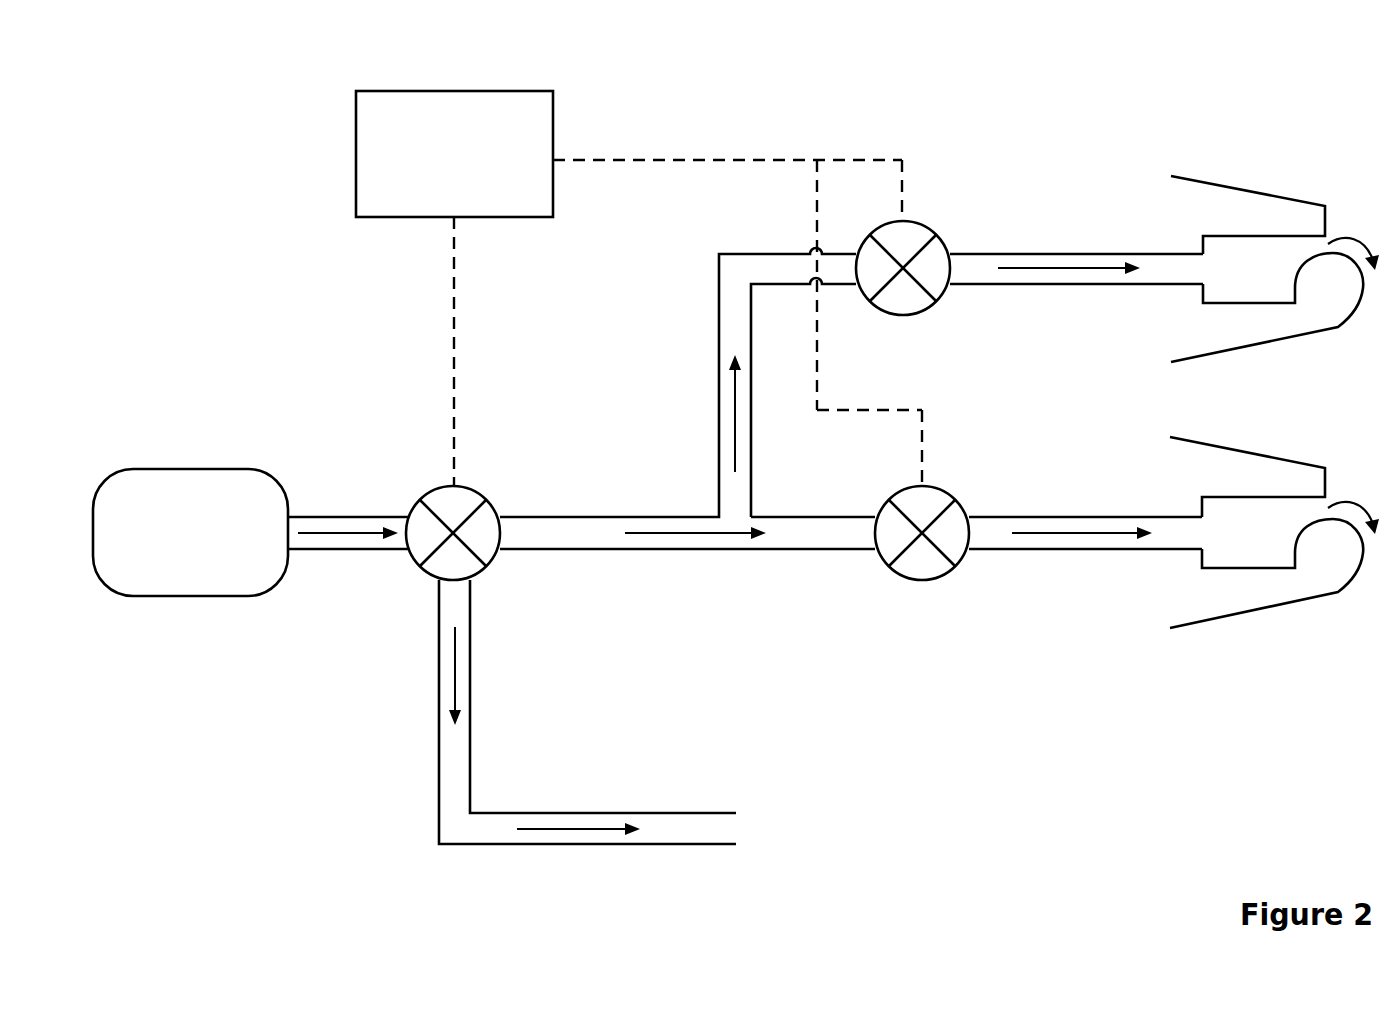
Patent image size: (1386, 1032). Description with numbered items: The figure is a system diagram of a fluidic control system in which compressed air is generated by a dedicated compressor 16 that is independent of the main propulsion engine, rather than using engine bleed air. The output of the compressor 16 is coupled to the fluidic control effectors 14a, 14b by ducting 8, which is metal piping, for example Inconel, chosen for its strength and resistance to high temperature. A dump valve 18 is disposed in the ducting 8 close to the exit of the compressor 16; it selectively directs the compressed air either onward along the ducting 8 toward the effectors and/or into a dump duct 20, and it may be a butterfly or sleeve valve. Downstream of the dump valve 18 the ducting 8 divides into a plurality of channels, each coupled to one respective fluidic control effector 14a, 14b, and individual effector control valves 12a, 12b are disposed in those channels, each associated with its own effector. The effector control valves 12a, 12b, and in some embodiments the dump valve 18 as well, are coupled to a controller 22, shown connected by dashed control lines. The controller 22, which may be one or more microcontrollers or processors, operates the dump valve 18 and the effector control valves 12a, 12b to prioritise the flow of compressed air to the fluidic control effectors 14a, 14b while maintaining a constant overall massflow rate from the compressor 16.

The controller 22 is at (446, 91).
The compressor 16 is at (210, 469).
The ducting 8 is at (352, 517).
The dump valve 18 is at (497, 505).
The effector control valve 12a is at (937, 237).
The effector control valve 12b is at (953, 500).
The fluidic control effector 14a is at (1283, 200).
The fluidic control effector 14b is at (1288, 460).
The dump duct 20 is at (660, 813).